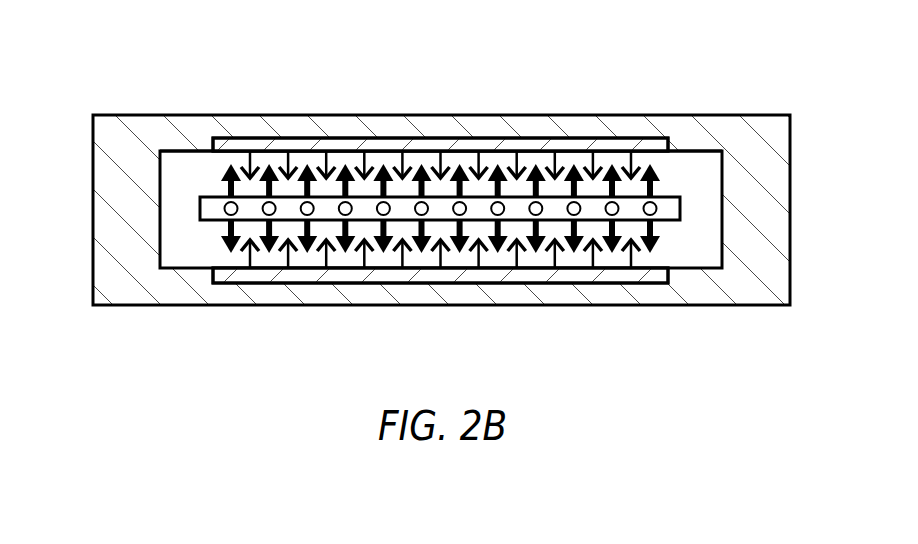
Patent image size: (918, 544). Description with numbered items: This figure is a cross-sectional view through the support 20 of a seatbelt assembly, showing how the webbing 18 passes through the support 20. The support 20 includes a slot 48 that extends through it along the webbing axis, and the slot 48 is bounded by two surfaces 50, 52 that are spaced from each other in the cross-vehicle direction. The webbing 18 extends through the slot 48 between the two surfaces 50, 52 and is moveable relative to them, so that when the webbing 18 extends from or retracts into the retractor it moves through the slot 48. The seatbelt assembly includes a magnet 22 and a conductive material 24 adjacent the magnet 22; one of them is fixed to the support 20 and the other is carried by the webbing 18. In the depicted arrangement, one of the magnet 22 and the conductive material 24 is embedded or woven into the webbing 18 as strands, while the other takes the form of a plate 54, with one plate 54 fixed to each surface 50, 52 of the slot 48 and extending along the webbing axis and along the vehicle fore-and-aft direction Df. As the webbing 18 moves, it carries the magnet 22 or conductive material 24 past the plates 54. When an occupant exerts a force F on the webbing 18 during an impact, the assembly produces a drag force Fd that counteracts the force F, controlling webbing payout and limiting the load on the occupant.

The webbing 18 is at (206, 190).
The support 20 is at (752, 115).
The magnet 22 is at (224, 208).
The conductive material 24 is at (524, 132).
The slot 48 is at (690, 244).
The surface 50 is at (690, 155).
The surface 52 is at (190, 264).
The plate 54 is at (357, 138).
The force F is at (656, 187).
The drag force Fd is at (633, 262).
The vehicle fore-and-aft direction Df is at (390, 23).